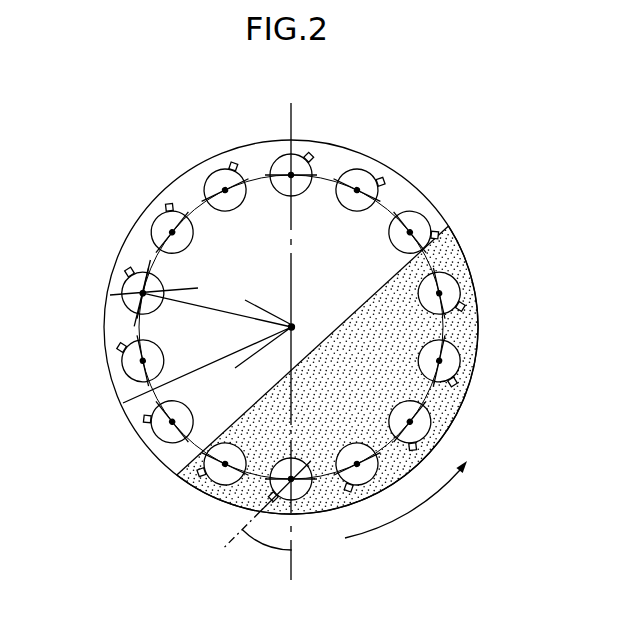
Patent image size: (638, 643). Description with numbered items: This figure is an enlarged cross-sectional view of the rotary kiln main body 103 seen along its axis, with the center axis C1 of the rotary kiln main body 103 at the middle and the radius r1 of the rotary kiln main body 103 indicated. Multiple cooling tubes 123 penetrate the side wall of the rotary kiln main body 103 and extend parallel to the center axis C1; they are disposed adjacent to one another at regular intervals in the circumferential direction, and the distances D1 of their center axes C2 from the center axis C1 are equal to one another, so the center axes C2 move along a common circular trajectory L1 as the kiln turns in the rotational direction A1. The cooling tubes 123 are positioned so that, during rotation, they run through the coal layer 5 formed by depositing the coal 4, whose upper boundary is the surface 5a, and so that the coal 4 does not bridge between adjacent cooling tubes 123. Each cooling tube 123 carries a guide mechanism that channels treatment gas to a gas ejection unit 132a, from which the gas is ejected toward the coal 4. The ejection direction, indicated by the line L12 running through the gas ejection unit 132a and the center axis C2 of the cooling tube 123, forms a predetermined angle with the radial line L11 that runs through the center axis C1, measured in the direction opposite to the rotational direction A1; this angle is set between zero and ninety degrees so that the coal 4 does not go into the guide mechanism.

The rotary kiln main body 103 is at (479, 345).
The cooling tube 123 is at (459, 281).
The gas ejection unit 132a is at (468, 311).
The coal 4 is at (327, 511).
The coal layer 5 is at (192, 498).
The surface 5a is at (178, 471).
The line in a radial direction L11 is at (296, 123).
The line through gas injection part and center axis of cooling tube L12 is at (221, 547).
The trajectory of center axis of cooling tube L1 is at (150, 262).
The center axis of rotary kiln main body C1 is at (293, 325).
The center axis of cooling tube C2 is at (121, 294).
The distance between center axis of rotary kiln main body and center axis of cooling D1 is at (201, 306).
The radius of rotary kiln main body r1 is at (207, 365).
The rotational direction of rotary kiln main body A1 is at (408, 516).